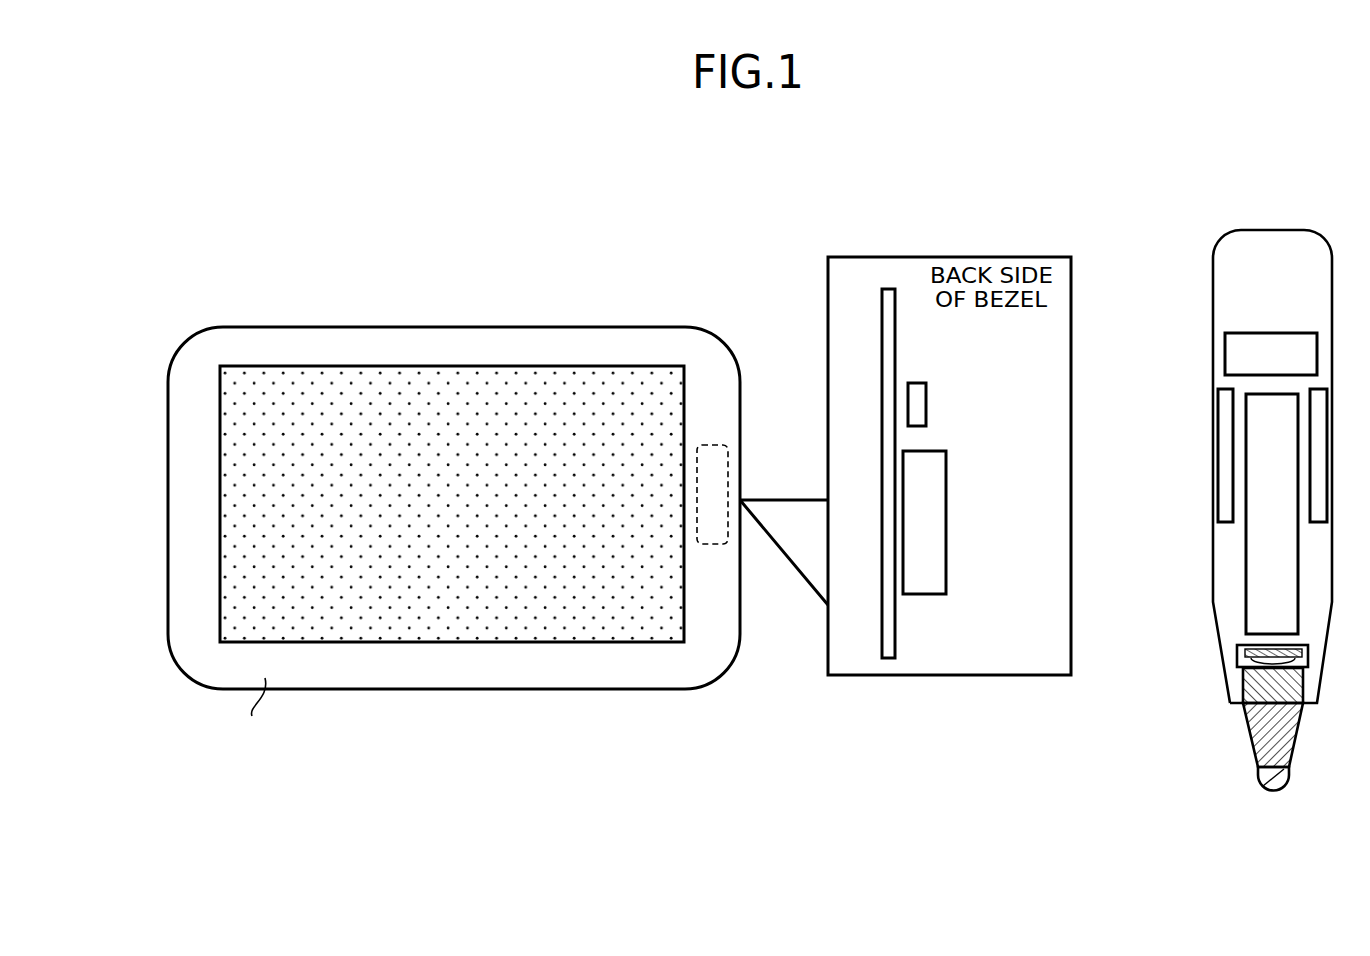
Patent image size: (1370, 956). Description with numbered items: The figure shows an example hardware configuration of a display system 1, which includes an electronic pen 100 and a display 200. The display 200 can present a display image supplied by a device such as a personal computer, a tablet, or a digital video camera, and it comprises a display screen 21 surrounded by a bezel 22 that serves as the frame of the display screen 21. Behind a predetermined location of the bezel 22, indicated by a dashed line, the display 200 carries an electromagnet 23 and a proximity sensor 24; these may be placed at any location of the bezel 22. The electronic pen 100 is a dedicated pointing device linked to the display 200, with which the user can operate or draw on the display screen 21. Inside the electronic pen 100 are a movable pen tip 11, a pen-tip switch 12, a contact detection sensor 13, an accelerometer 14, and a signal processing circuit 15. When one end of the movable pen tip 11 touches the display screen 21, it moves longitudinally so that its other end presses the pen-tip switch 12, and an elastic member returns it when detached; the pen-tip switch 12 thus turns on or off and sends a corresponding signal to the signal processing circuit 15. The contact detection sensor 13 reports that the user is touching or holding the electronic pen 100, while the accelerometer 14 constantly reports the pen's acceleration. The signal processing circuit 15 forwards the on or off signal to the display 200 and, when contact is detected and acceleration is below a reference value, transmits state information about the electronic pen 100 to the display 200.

The display system 1 is at (275, 151).
The electronic pen 100 is at (1272, 183).
The display 200 is at (516, 269).
The display screen 21 is at (383, 632).
The bezel 22 is at (973, 633).
The electromagnet 23 is at (937, 526).
The proximity sensor 24 is at (917, 405).
The movable pen tip 11 is at (1257, 718).
The pen-tip switch 12 is at (1245, 651).
The contact detection sensor 13 is at (1320, 443).
The accelerometer 14 is at (1236, 348).
The signal processing circuit 15 is at (1258, 552).